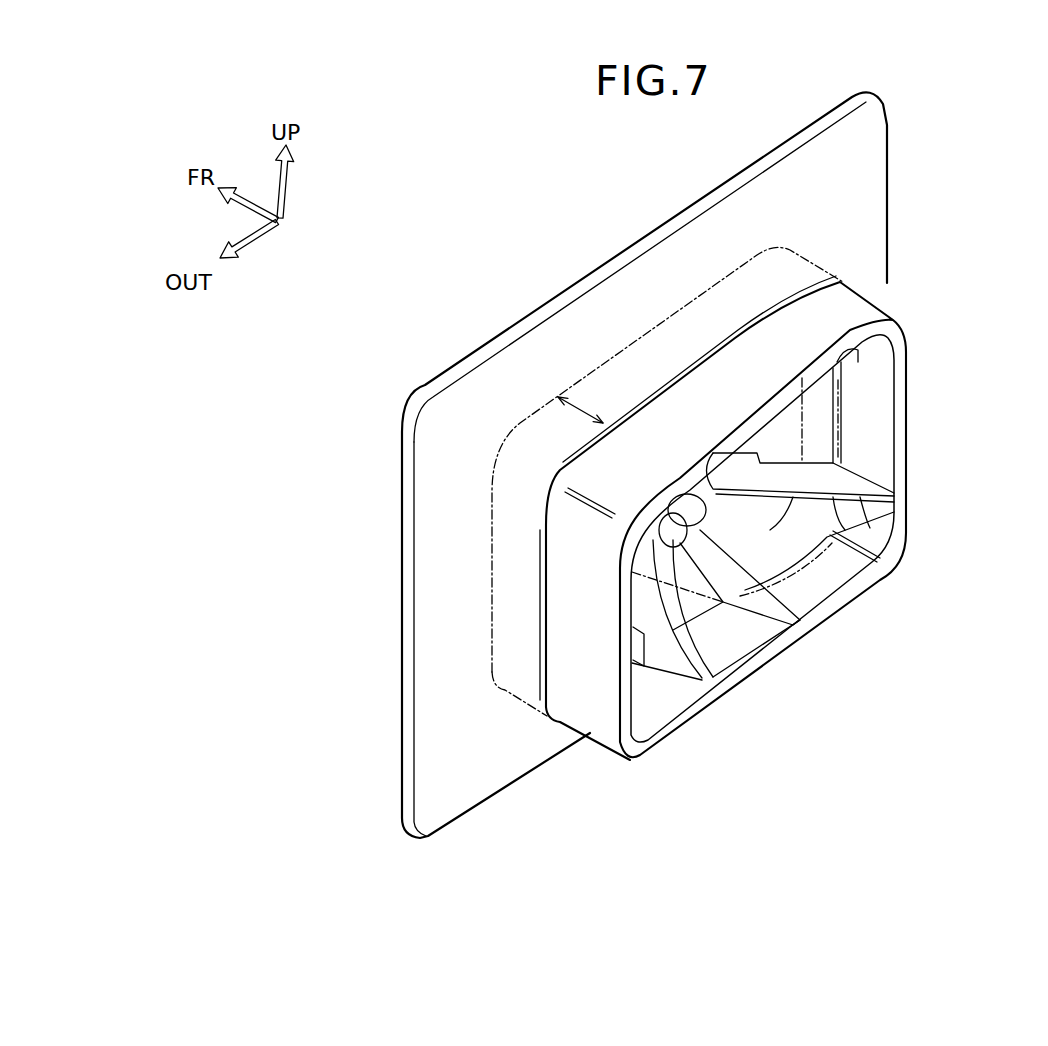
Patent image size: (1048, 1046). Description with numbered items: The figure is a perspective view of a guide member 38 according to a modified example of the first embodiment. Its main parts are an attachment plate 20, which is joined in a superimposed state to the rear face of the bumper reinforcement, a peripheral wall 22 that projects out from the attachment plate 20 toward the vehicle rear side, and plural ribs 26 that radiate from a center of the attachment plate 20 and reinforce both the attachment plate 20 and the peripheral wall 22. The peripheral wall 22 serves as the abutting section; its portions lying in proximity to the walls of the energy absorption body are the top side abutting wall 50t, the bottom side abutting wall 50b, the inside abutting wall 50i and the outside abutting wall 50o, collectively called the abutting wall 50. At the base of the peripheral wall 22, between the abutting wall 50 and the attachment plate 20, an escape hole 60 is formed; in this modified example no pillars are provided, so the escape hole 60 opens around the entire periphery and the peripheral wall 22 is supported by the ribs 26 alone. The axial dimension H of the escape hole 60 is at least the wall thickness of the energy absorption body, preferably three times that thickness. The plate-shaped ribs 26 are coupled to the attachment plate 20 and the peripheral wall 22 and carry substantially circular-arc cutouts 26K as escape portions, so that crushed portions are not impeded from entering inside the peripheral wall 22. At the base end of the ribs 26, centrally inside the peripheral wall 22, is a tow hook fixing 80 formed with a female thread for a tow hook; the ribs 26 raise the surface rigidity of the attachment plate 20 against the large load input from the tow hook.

The attachment plate 20 is at (621, 256).
The peripheral wall 22 is at (913, 414).
The ribs 26 is at (858, 505).
The cutouts 26K is at (790, 462).
The guide member 38 is at (941, 219).
The abutting wall 50 is at (722, 500).
The top side abutting wall 50t is at (723, 383).
The outside abutting wall 50o is at (563, 595).
The bottom side abutting wall 50b is at (813, 628).
The inside abutting wall 50i is at (909, 470).
The escape hole 60 is at (653, 357).
The tow hook fixing 80 is at (687, 496).
The dimension of the escape holes H is at (580, 410).